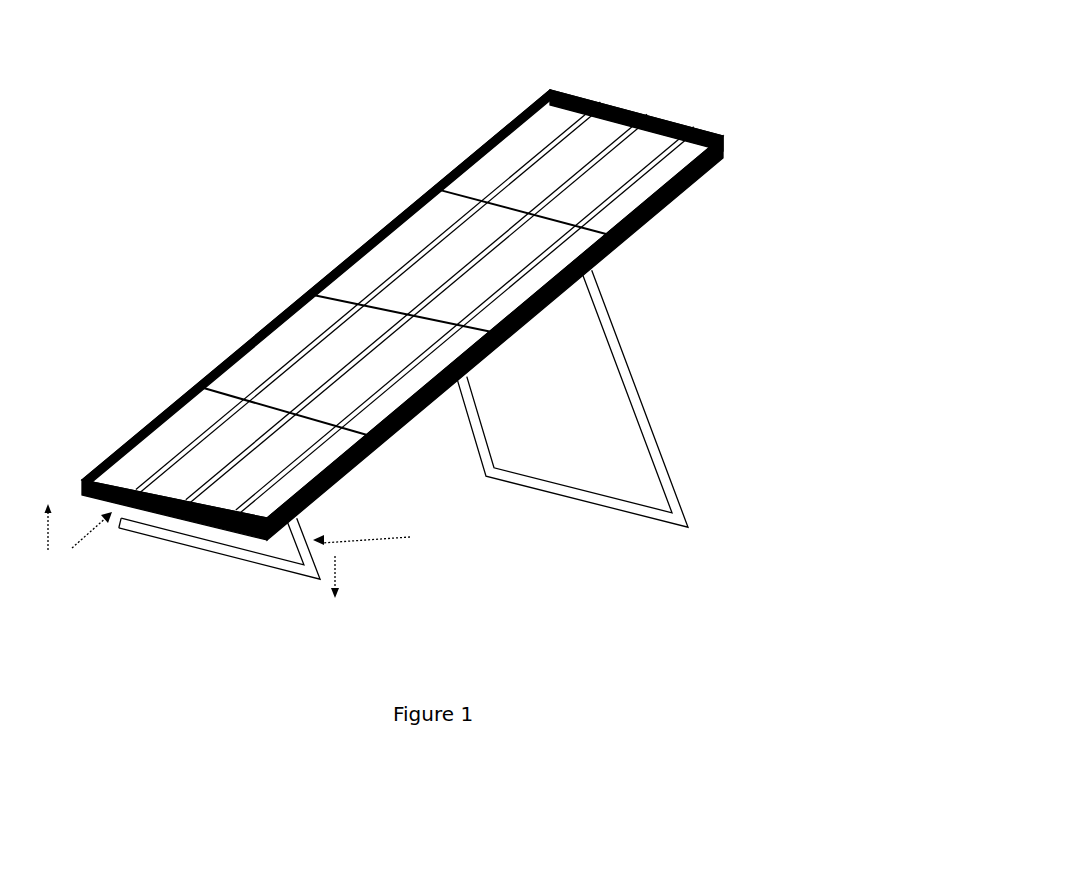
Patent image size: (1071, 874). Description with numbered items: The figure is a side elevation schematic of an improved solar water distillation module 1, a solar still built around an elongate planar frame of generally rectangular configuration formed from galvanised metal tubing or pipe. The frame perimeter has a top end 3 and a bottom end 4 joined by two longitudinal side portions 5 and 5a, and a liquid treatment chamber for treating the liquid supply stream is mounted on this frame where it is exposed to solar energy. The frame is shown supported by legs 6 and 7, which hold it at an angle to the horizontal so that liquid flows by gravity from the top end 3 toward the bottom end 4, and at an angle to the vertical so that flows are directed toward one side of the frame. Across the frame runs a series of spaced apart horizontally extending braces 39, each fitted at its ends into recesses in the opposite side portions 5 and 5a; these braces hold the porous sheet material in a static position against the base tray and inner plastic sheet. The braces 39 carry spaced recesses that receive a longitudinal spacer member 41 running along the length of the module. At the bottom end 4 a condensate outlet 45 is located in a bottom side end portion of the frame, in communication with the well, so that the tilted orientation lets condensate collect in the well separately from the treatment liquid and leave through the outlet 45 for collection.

The solar water distillation module 1 is at (228, 228).
The top end 3 is at (630, 107).
The bottom end 4 is at (143, 502).
The longitudinal side portion 5 is at (243, 330).
The longitudinal side portion 5a is at (622, 242).
The leg 6 is at (240, 551).
The leg 7 is at (646, 394).
The horizontally extending braces 39 is at (458, 190).
The longitudinal spacer member 41 is at (207, 437).
The condensate outlet 45 is at (263, 543).